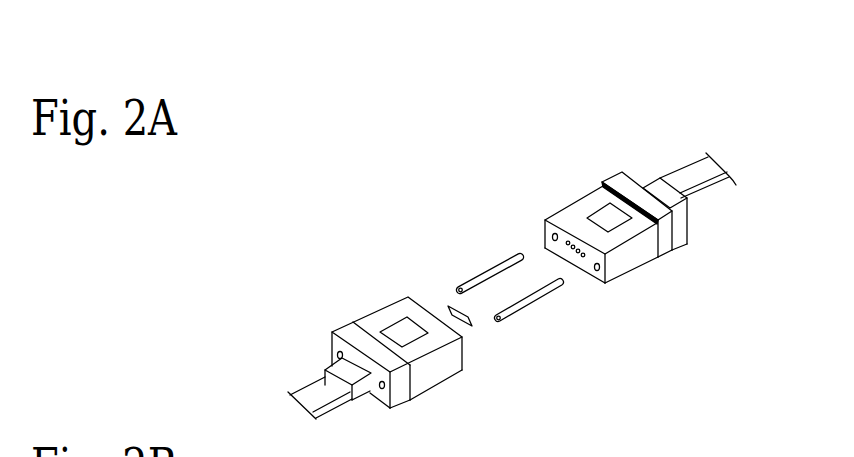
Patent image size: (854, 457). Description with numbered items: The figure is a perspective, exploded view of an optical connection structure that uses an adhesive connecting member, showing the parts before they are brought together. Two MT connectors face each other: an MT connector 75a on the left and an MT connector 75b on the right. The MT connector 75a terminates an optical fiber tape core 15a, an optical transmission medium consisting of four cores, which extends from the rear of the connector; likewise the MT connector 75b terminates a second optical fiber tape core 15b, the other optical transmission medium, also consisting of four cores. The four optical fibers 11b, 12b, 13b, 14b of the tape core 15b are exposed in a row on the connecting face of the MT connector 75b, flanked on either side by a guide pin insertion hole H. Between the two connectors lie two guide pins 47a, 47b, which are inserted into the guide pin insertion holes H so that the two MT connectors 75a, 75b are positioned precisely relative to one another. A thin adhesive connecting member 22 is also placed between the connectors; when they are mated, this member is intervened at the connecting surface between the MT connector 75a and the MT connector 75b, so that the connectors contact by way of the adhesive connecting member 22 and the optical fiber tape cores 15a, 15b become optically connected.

The MT connector 75a is at (380, 310).
The MT connector 75b is at (578, 200).
The optical fiber tape core 15a is at (323, 409).
The optical fiber tape core 15b is at (702, 199).
The guide pin 47a is at (483, 272).
The guide pin 47b is at (532, 305).
The adhesive connecting member 22 is at (449, 300).
The guide pin insertion hole H is at (543, 225).
The optical fiber 11b is at (622, 290).
The optical fiber 12b is at (573, 247).
The optical fiber 13b is at (578, 251).
The optical fiber 14b is at (577, 253).